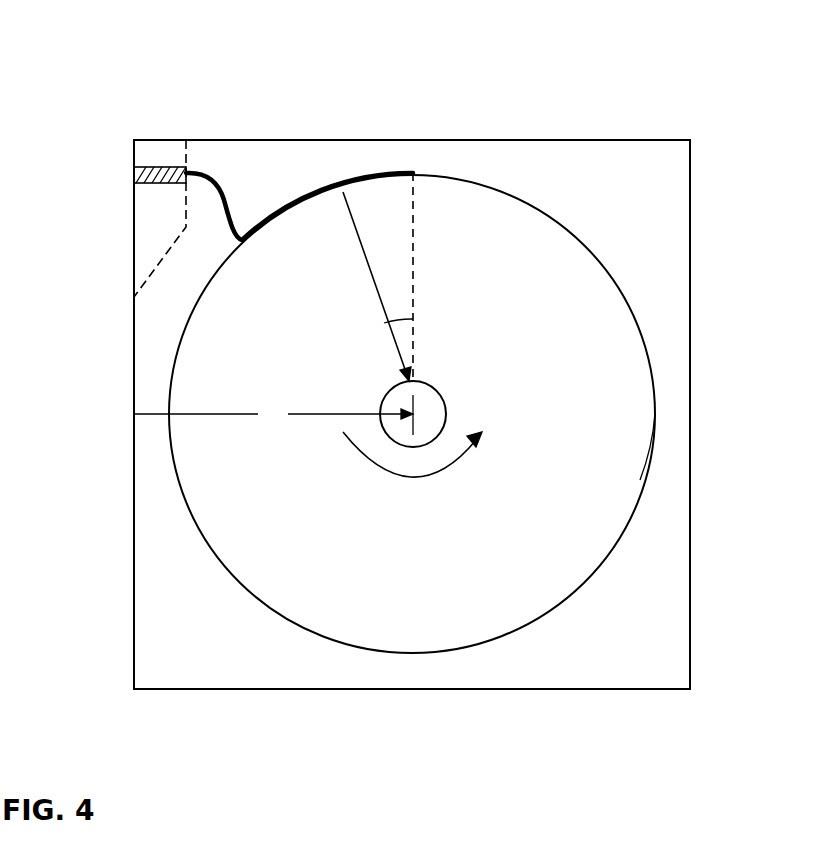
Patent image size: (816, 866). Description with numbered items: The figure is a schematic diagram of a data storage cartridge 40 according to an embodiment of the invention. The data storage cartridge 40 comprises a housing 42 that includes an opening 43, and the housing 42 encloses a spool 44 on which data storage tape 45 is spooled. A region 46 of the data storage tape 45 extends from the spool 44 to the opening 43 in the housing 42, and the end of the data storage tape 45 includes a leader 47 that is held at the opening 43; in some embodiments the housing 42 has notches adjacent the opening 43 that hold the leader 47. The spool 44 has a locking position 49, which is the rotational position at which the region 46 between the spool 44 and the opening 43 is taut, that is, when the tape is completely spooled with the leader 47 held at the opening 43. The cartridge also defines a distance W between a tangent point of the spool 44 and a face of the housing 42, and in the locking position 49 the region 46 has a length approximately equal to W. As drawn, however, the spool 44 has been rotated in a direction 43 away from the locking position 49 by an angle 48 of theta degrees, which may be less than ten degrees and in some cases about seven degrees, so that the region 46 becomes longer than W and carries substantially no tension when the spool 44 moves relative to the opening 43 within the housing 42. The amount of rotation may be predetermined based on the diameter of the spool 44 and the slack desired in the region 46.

The data storage cartridge 40 is at (172, 56).
The housing 42 is at (673, 224).
The opening / direction 43 is at (118, 224).
The spool 44 is at (622, 378).
The data storage tape 45 is at (655, 430).
The region 46 is at (308, 174).
The leader 47 is at (135, 175).
The angle 48 is at (394, 277).
The locking position 49 is at (416, 210).